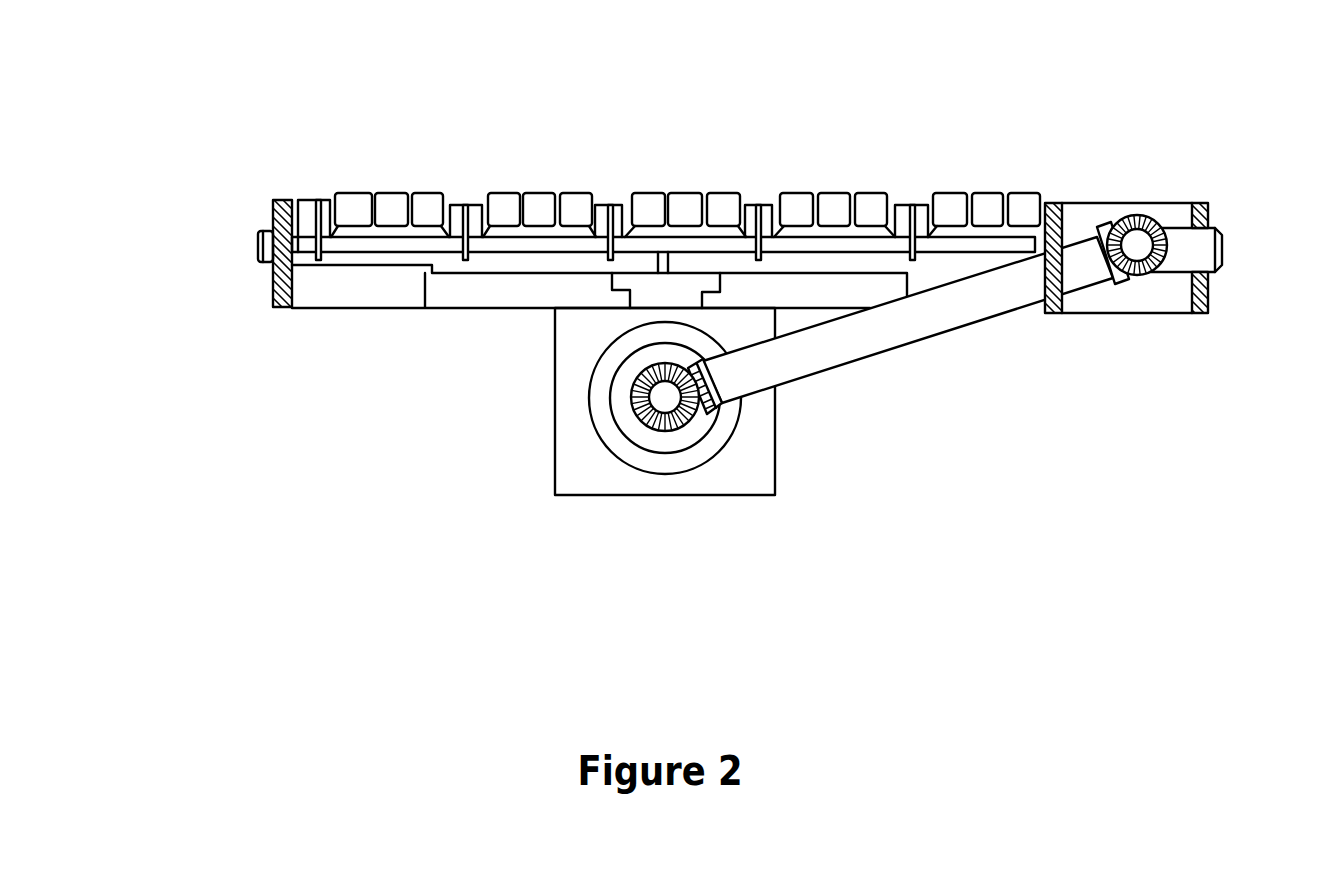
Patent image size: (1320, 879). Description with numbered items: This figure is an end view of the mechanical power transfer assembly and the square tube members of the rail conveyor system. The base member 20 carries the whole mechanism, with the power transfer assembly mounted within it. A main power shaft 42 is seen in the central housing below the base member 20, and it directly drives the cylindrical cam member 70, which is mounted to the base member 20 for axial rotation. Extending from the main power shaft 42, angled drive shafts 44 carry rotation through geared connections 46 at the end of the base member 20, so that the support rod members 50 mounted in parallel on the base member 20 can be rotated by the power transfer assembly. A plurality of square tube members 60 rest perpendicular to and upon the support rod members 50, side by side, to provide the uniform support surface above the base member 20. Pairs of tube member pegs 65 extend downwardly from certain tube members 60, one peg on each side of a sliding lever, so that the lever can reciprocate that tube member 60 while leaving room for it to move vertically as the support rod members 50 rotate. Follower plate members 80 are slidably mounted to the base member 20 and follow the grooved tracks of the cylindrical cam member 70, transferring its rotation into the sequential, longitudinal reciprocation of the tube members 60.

The base member 20 is at (272, 270).
The main power shaft 42 is at (667, 398).
The drive shafts 44 is at (257, 248).
The geared connections 46 is at (1170, 210).
The support rod members 50 is at (390, 243).
The square tube members 60 is at (428, 193).
The tube member pegs 65 is at (465, 203).
The cylindrical cam member 70 is at (697, 468).
The follower plate members 80 is at (620, 285).